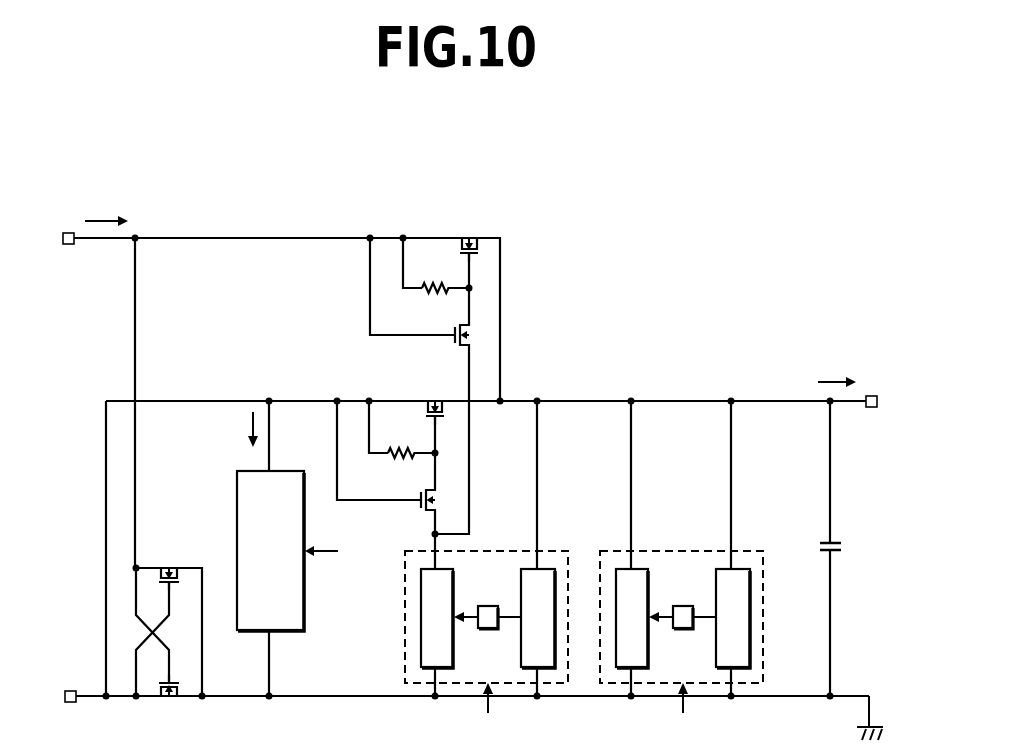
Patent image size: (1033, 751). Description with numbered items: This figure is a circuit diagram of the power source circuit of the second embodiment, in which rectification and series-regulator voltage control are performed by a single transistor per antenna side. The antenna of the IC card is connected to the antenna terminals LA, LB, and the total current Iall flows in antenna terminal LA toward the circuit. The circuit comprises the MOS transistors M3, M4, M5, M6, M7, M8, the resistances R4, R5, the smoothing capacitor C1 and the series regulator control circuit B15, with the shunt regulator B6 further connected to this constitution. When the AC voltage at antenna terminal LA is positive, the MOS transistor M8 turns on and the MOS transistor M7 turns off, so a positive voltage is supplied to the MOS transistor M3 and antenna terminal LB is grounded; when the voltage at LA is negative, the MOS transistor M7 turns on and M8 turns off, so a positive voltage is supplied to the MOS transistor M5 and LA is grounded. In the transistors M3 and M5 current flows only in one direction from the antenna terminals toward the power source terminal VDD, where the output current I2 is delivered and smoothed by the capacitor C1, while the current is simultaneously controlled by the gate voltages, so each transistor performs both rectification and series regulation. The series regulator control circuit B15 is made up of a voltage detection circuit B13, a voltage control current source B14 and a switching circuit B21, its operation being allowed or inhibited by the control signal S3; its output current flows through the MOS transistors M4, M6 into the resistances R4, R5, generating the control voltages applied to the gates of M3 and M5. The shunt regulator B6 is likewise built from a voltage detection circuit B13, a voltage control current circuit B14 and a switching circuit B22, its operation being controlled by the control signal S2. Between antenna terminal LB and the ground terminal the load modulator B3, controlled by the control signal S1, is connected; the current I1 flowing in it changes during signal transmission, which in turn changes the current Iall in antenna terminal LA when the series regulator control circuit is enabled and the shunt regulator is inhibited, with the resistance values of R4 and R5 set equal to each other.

The antenna terminal LA is at (65, 232).
The antenna terminal LB is at (66, 702).
The power source terminal VDD is at (872, 396).
The electric current flowing in antenna terminal LA Iall is at (106, 205).
The electric current flowing in load modulator I1 is at (239, 430).
The output current I2 is at (837, 368).
The MOS transistor M3 is at (467, 236).
The MOS transistor M4 is at (443, 326).
The MOS transistor M5 is at (433, 399).
The MOS transistor M6 is at (411, 492).
The MOS transistor M7 is at (166, 565).
The MOS transistor M8 is at (166, 702).
The resistance R4 is at (445, 276).
The resistance R5 is at (411, 442).
The load modulator B3 is at (287, 471).
The control signal S1 is at (336, 551).
The control signal S2 is at (684, 714).
The control signal S3 is at (489, 714).
The shunt regulator B6 is at (747, 551).
The series regulator control circuit B15 is at (552, 551).
The voltage detection circuit B13 is at (520, 636).
The voltage control current source B14 is at (454, 598).
The switching circuit B21 is at (496, 606).
The switching circuit B22 is at (690, 606).
The smoothing capacitor C1 is at (848, 547).